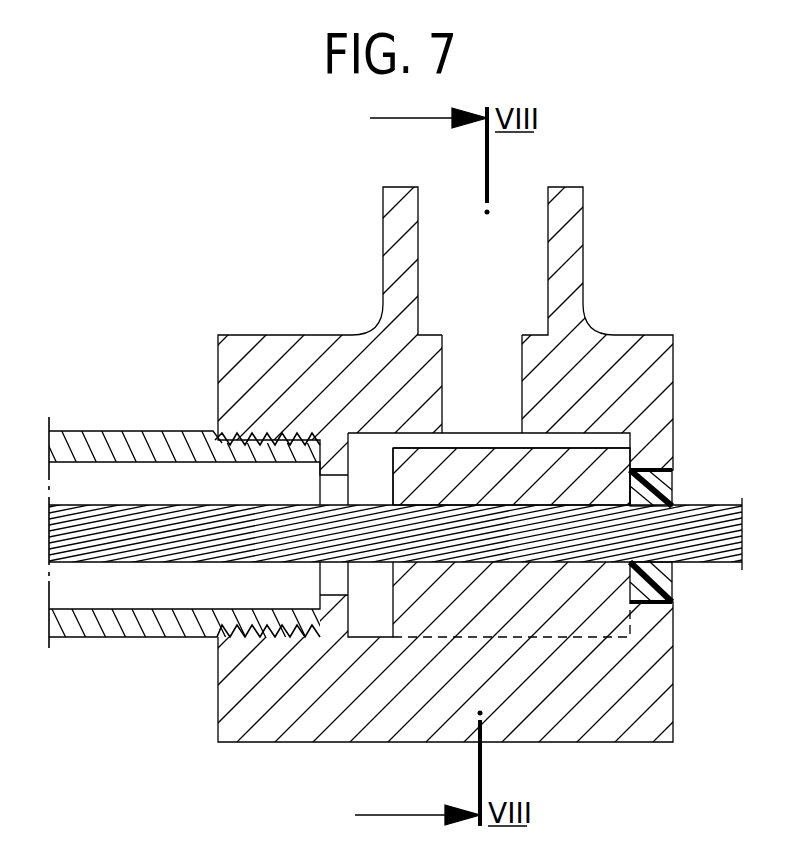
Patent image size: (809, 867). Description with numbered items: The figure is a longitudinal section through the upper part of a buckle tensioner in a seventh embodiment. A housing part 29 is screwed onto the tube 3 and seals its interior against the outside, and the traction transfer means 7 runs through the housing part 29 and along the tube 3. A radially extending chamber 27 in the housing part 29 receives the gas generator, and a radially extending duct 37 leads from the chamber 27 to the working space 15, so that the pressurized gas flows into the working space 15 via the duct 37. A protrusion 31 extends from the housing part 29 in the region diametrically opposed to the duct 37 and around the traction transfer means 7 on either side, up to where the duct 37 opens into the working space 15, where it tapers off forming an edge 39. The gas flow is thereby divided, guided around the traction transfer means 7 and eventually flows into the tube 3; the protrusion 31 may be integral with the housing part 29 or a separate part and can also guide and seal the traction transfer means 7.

The tube 3 is at (123, 615).
The traction transfer means 7 is at (704, 533).
The working space 15 is at (610, 443).
The chamber 27 is at (528, 252).
The housing part 29 is at (271, 364).
The protrusion 31 is at (533, 577).
The duct 37 is at (460, 364).
The edge 39 is at (563, 443).